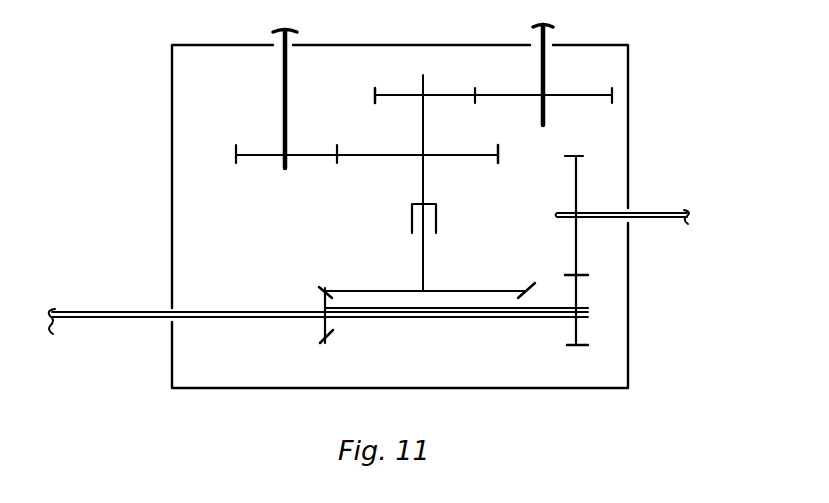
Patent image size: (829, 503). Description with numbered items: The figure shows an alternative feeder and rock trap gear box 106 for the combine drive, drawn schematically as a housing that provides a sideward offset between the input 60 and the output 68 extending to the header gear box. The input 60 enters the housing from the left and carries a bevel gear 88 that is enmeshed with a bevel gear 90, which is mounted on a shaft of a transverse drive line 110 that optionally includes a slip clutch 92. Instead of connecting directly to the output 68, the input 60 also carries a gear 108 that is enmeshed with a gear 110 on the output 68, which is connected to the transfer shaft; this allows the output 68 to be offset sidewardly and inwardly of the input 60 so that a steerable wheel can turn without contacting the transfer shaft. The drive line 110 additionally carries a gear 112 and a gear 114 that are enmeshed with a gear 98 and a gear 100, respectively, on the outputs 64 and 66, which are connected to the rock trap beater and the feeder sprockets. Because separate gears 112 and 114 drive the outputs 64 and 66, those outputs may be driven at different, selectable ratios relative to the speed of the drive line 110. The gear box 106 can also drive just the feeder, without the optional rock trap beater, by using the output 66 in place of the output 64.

The input 60 is at (116, 322).
The output 64 is at (300, 36).
The output 66 is at (553, 33).
The output 68 is at (684, 220).
The bevel gear 88 is at (323, 340).
The bevel gear 90 is at (348, 290).
The slip clutch 92 is at (412, 213).
The gear 98 is at (232, 165).
The gear 100 is at (613, 90).
The feeder and rock trap gear box 106 is at (603, 390).
The gear 108 is at (570, 337).
The transverse drive line 110 is at (426, 253).
The gear 112 is at (502, 157).
The gear 114 is at (375, 92).